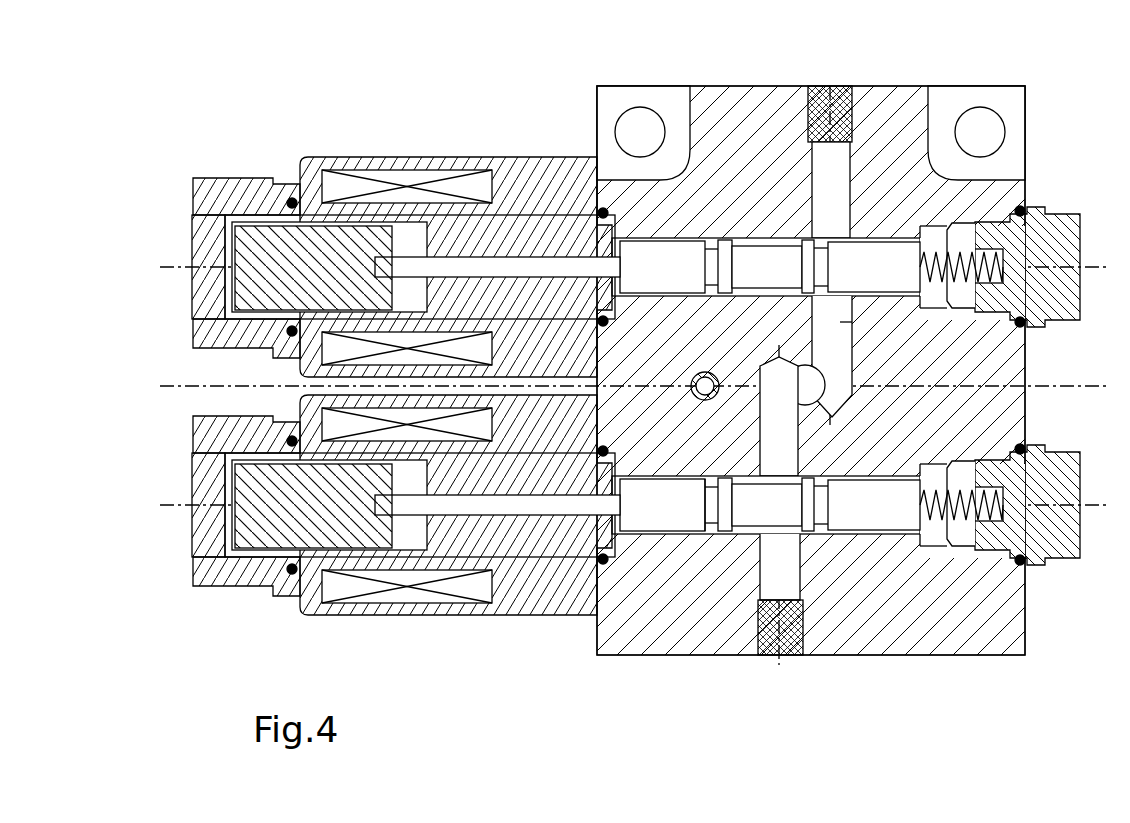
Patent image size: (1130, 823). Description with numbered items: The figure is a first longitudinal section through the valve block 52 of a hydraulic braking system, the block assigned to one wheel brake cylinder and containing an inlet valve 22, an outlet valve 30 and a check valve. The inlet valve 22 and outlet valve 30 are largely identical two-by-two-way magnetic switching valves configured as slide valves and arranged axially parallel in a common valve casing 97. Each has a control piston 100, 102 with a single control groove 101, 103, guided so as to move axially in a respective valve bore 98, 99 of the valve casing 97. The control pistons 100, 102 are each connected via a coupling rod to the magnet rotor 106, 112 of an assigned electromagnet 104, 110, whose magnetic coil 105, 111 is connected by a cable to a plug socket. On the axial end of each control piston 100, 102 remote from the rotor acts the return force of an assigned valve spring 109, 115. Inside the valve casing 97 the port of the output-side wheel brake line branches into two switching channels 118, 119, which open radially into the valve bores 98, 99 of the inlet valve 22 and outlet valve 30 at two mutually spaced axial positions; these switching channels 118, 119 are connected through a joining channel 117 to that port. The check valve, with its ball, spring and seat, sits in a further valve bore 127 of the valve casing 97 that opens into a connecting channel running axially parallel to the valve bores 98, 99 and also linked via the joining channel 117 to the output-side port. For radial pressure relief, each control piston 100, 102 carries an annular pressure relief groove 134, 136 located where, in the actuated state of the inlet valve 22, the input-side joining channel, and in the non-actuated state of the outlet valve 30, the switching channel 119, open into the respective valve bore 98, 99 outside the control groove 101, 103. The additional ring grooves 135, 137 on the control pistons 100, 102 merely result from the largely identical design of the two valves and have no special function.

The inlet valve 22 is at (541, 404).
The outlet valve 30 is at (540, 97).
The valve block 52 is at (342, 97).
The valve casing 97 is at (643, 598).
The valve bore 98 is at (930, 522).
The valve bore 99 is at (928, 245).
The control piston 100 is at (878, 522).
The control groove 101 is at (750, 532).
The control piston 102 is at (875, 253).
The control groove 103 is at (767, 258).
The electromagnet 104 is at (397, 545).
The magnetic coil 105 is at (407, 541).
The magnet rotor 106 is at (313, 569).
The valve spring 109 is at (960, 525).
The electromagnet 110 is at (252, 168).
The magnetic coil 111 is at (405, 172).
The magnet rotor 112 is at (258, 250).
The valve spring 115 is at (960, 252).
The joining channel 117 is at (812, 395).
The switching channel 118 is at (798, 440).
The switching channel 119 is at (840, 322).
The valve bore 127 is at (705, 371).
The pressure relief groove 134 is at (708, 532).
The ring groove 135 is at (820, 522).
The pressure relief groove 136 is at (820, 247).
The ring groove 137 is at (700, 238).